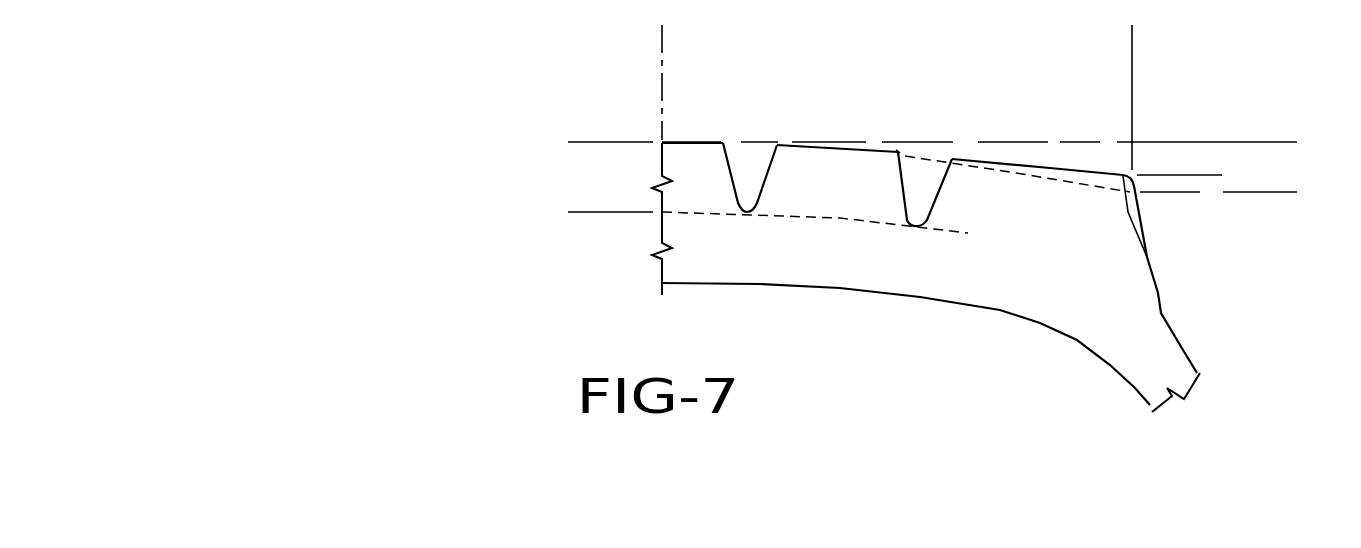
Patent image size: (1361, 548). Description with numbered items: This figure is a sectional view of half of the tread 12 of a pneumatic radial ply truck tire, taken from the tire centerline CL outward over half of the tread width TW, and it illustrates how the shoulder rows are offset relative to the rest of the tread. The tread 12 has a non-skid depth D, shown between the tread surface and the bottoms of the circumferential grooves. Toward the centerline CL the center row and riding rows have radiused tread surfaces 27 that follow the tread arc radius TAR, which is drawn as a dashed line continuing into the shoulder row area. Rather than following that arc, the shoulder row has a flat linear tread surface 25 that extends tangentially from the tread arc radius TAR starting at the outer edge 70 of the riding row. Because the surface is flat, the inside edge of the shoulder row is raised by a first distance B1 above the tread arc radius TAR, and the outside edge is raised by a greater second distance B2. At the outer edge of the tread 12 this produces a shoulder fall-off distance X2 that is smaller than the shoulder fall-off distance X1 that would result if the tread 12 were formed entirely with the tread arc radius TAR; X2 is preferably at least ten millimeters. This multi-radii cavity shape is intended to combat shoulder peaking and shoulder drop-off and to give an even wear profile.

The tread 12 is at (620, 70).
The flat linear tread surfaces 25 is at (1051, 166).
The radiused tread surfaces 27 is at (723, 142).
The outer edges of the riding rows 70 is at (900, 152).
The centerline CL is at (663, 147).
The tread width TW is at (1117, 38).
The non-skid depth D is at (582, 93).
The first distance B1 is at (961, 220).
The second distance B2 is at (1108, 120).
The shoulder fall-off distance X1 is at (1279, 88).
The shoulder fall-off distance X2 is at (1208, 88).
The tread arc radius TAR is at (839, 163).